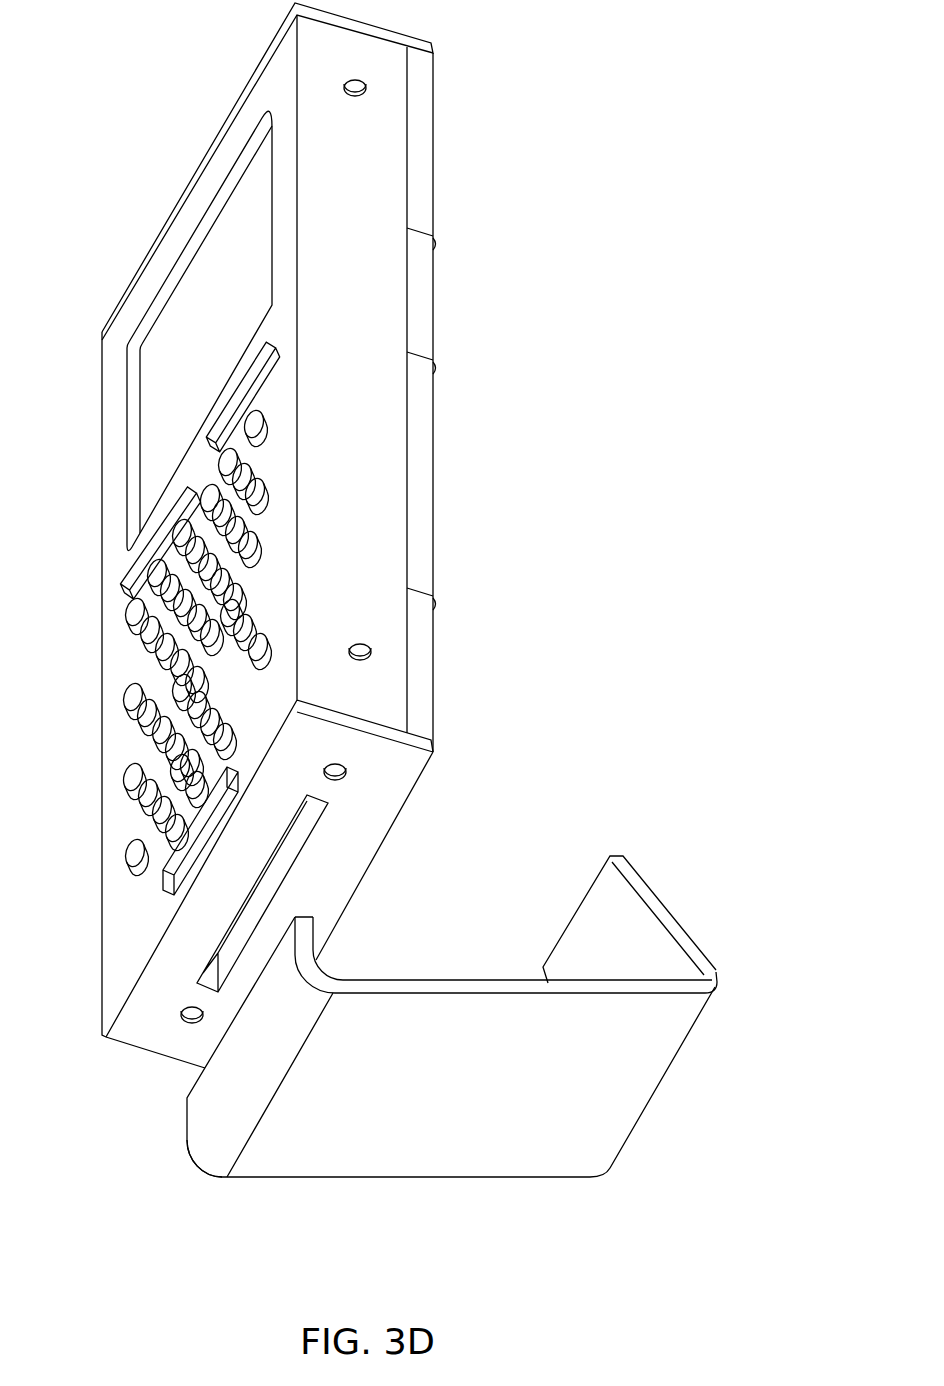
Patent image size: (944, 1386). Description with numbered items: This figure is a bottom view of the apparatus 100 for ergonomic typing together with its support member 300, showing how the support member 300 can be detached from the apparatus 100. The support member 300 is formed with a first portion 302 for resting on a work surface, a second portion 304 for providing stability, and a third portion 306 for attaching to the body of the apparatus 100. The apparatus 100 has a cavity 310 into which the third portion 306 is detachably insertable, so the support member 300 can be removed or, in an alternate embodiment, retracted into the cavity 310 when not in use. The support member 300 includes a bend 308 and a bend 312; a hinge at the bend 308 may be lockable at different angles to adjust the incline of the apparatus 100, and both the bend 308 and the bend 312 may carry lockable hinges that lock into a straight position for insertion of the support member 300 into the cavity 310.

The apparatus 100 is at (320, 535).
The support member 300 is at (449, 1069).
The first portion 302 is at (522, 1180).
The second portion 304 is at (665, 908).
The third portion 306 is at (185, 1108).
The bend 308 is at (193, 1165).
The cavity 310 is at (228, 930).
The bend 312 is at (718, 985).